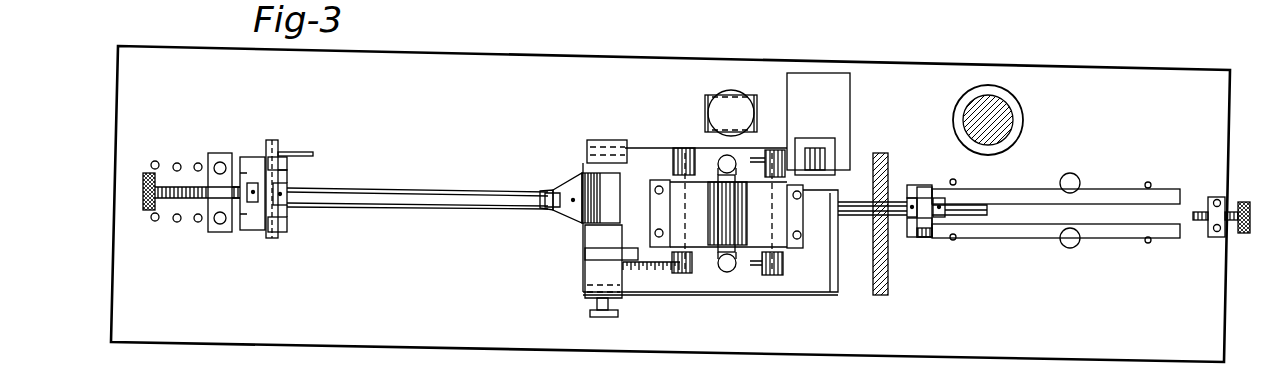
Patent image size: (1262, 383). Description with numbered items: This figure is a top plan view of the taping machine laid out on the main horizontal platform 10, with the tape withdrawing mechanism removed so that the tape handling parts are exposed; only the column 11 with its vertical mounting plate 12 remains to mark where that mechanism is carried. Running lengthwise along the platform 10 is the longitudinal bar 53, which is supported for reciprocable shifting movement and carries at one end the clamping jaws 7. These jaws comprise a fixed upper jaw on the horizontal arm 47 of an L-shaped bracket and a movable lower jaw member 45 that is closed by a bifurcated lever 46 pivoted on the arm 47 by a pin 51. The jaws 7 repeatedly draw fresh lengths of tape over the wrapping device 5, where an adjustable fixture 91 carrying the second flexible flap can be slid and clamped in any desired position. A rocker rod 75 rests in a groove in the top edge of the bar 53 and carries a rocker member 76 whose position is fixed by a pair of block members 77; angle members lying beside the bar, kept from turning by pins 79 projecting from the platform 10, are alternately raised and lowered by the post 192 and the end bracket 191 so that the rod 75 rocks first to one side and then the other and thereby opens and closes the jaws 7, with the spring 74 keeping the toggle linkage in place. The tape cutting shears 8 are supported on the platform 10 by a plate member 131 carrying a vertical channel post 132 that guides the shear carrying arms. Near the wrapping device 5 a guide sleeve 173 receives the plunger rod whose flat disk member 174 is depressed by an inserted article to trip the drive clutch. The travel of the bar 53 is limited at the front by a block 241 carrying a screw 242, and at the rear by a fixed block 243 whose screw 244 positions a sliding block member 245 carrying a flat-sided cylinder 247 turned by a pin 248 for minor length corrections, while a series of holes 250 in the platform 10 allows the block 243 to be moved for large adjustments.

The wrapping device 5 is at (697, 299).
The clamping jaws 7 is at (575, 171).
The tape cutting shears 8 is at (838, 264).
The platform 10 is at (1170, 69).
The column 11 is at (1012, 122).
The mounting plate 12 is at (798, 78).
The lower jaw member 45 is at (554, 211).
The lever 46 is at (519, 199).
The arm 47 is at (427, 201).
The pin 51 is at (392, 190).
The longitudinal bar 53 is at (989, 210).
The spring 74 is at (270, 176).
The rocker rod 75 is at (861, 181).
The rocker member 76 is at (927, 191).
The block members 77 is at (910, 218).
The pins 79 is at (956, 181).
The adjustable fixture 91 is at (596, 255).
The plate member 131 is at (850, 100).
The vertical channel post 132 is at (828, 138).
The guide sleeve 173 is at (709, 97).
The disk member 174 is at (745, 92).
The end bracket 191 is at (1065, 247).
The post 192 is at (1066, 173).
The block 241 is at (1220, 199).
The screw 242 is at (1196, 222).
The fixed block 243 is at (230, 141).
The screw 244 is at (146, 213).
The sliding block member 245 is at (252, 232).
The cylinder 247 is at (281, 150).
The pin 248 is at (313, 156).
The holes 250 is at (197, 163).